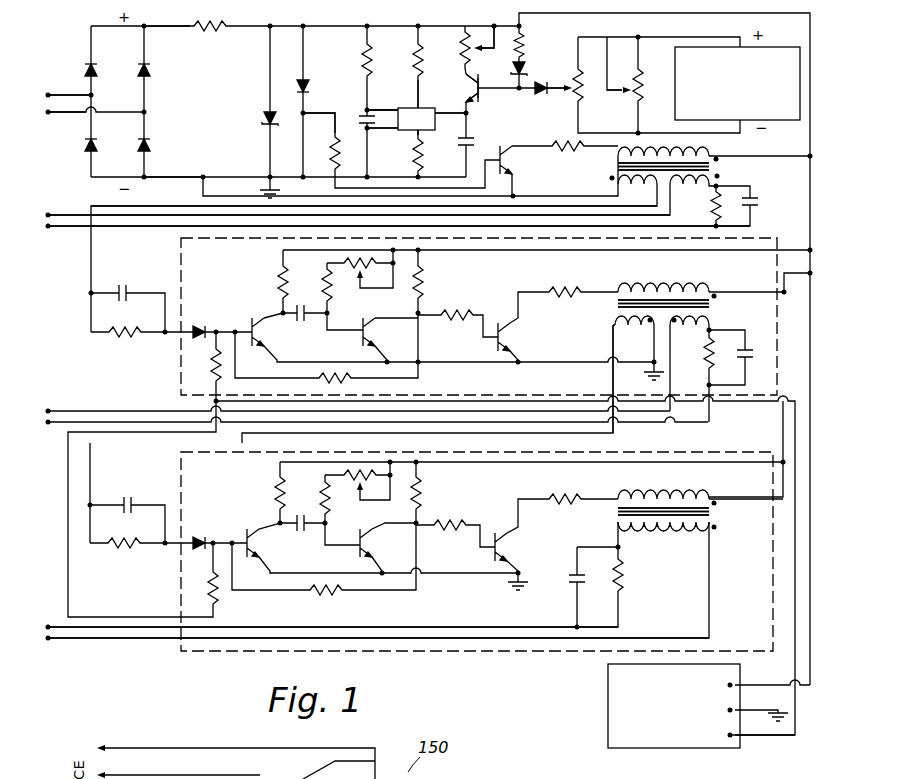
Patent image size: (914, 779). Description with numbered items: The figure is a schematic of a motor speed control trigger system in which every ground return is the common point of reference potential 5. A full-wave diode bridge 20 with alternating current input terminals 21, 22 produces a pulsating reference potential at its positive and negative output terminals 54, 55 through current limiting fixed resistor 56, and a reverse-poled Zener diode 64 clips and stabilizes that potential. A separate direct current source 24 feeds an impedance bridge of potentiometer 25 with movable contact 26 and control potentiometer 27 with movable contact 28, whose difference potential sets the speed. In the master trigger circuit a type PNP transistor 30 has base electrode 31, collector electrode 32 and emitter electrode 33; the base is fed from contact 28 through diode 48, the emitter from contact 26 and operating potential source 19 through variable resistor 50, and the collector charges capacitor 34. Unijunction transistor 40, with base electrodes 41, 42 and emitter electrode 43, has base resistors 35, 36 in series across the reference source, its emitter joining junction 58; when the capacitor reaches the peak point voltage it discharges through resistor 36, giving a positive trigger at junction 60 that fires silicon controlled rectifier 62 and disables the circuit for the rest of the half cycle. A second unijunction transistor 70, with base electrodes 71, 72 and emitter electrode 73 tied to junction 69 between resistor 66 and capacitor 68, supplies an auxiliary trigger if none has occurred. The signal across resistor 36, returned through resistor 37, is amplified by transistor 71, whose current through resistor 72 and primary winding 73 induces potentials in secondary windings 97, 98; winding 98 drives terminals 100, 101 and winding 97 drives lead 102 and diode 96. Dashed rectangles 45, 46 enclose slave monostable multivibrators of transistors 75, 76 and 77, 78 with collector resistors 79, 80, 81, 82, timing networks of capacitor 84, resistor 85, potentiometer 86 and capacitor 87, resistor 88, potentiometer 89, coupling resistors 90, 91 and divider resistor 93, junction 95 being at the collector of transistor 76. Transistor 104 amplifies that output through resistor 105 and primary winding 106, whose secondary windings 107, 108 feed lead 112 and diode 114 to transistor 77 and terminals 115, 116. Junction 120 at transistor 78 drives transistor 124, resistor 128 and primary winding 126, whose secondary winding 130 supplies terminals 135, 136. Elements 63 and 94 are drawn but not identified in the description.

The point of reference or ground potential 5 is at (260, 190).
The source of direct current operating potential 19 is at (607, 708).
The full-wave diode bridge rectifier circuit 20 is at (165, 106).
The alternating current input circuit terminal 21 is at (48, 95).
The alternating current input circuit terminal 22 is at (48, 112).
The separate source of direct current potential 24 is at (770, 45).
The potentiometer 25 is at (643, 91).
The movable contact 26 is at (636, 85).
The control potentiometer 27 is at (583, 95).
The movable contact 28 is at (576, 82).
The transistor 30 is at (480, 90).
The base electrode 31 is at (479, 82).
The collector electrode 32 is at (478, 106).
The emitter electrode 33 is at (470, 72).
The capacitor 34 is at (504, 150).
The base resistor 35 is at (413, 63).
The base resistor 36 is at (420, 150).
The resistor 37 is at (330, 153).
The unijunction transistor 40 is at (444, 106).
The base electrode 41 is at (420, 105).
The base electrode 42 is at (420, 132).
The emitter electrode 43 is at (455, 113).
The dashed rectangle 45 is at (770, 240).
The dashed rectangle 46 is at (774, 522).
The diode 48 is at (541, 96).
The variable resistor 50 is at (466, 45).
The positive polarity output terminal 54 is at (146, 26).
The negative polarity output terminal 55 is at (146, 177).
The current limiting fixed resistor 56 is at (212, 34).
The junction 58 is at (478, 125).
The junction 60 is at (418, 148).
The silicon controlled rectifier 62 is at (310, 85).
The junction 63 is at (333, 114).
The Zener diode 64 is at (264, 118).
The resistor 66 is at (362, 65).
The capacitor 68 is at (360, 118).
The junction 69 is at (367, 110).
The second unijunction transistor 70 is at (397, 126).
The transistor 71 is at (400, 108).
The current limiting resistor 72 is at (400, 130).
The primary winding 73 is at (398, 112).
The transistor 75 is at (268, 334).
The transistor 76 is at (378, 331).
The transistor 77 is at (270, 545).
The transistor 78 is at (376, 545).
The resistor 79 is at (280, 278).
The resistor 80 is at (425, 280).
The resistor 81 is at (275, 492).
The resistor 82 is at (425, 495).
The capacitor 84 is at (305, 322).
The fixed resistor 85 is at (324, 270).
The potentiometer 86 is at (358, 265).
The capacitor 87 is at (303, 512).
The fixed resistor 88 is at (330, 500).
The potentiometer 89 is at (362, 480).
The resistor 90 is at (338, 380).
The resistor 91 is at (350, 590).
The resistor 93 is at (212, 355).
The resistor 94 is at (212, 575).
The junction 95 is at (437, 316).
The diode 96 is at (205, 325).
The secondary winding 97 is at (642, 186).
The secondary winding 98 is at (692, 186).
The terminal 100 is at (48, 226).
The terminal 101 is at (48, 214).
The lead 102 is at (182, 206).
The transistor 104 is at (514, 331).
The current limiting resistor 105 is at (560, 288).
The primary winding 106 is at (660, 287).
The secondary winding 107 is at (645, 326).
The secondary winding 108 is at (703, 327).
The lead 112 is at (612, 374).
The diode 114 is at (198, 540).
The terminal 115 is at (48, 422).
The terminal 116 is at (48, 411).
The junction 120 is at (440, 525).
The transistor 124 is at (512, 546).
The primary winding 126 is at (645, 497).
The current limiting resistor 128 is at (555, 497).
The secondary winding 130 is at (650, 532).
The terminal 135 is at (48, 627).
The terminal 136 is at (48, 638).